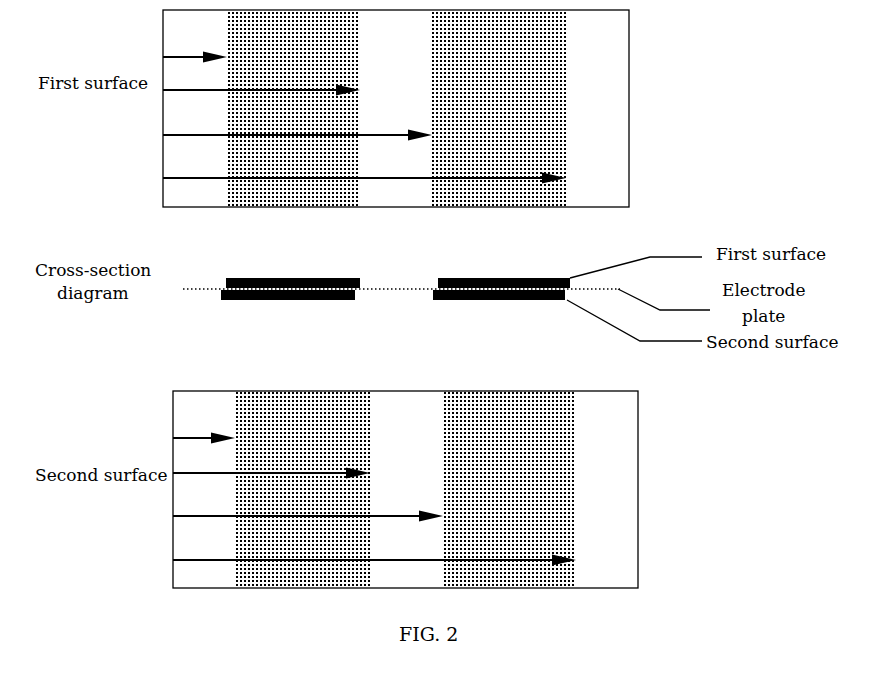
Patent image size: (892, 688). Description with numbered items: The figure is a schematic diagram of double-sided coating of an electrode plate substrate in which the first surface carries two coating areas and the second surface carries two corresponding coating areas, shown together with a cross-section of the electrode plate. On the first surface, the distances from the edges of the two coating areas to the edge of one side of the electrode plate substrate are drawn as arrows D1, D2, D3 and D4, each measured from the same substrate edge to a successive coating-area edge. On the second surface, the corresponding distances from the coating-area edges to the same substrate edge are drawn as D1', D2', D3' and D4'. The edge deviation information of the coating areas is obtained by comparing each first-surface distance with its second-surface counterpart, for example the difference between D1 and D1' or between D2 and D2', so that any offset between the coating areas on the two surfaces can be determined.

The first distance of first coating area edge D1 is at (195, 49).
The first distance of second coating area edge D2 is at (261, 81).
The first distance of third coating area edge D3 is at (297, 124).
The first distance of fourth coating area edge D4 is at (364, 168).
The second distance of first coating area edge D1' is at (204, 428).
The second distance of second coating area edge D2' is at (271, 463).
The second distance of third coating area edge D3' is at (308, 506).
The second distance of fourth coating area edge D4' is at (374, 550).